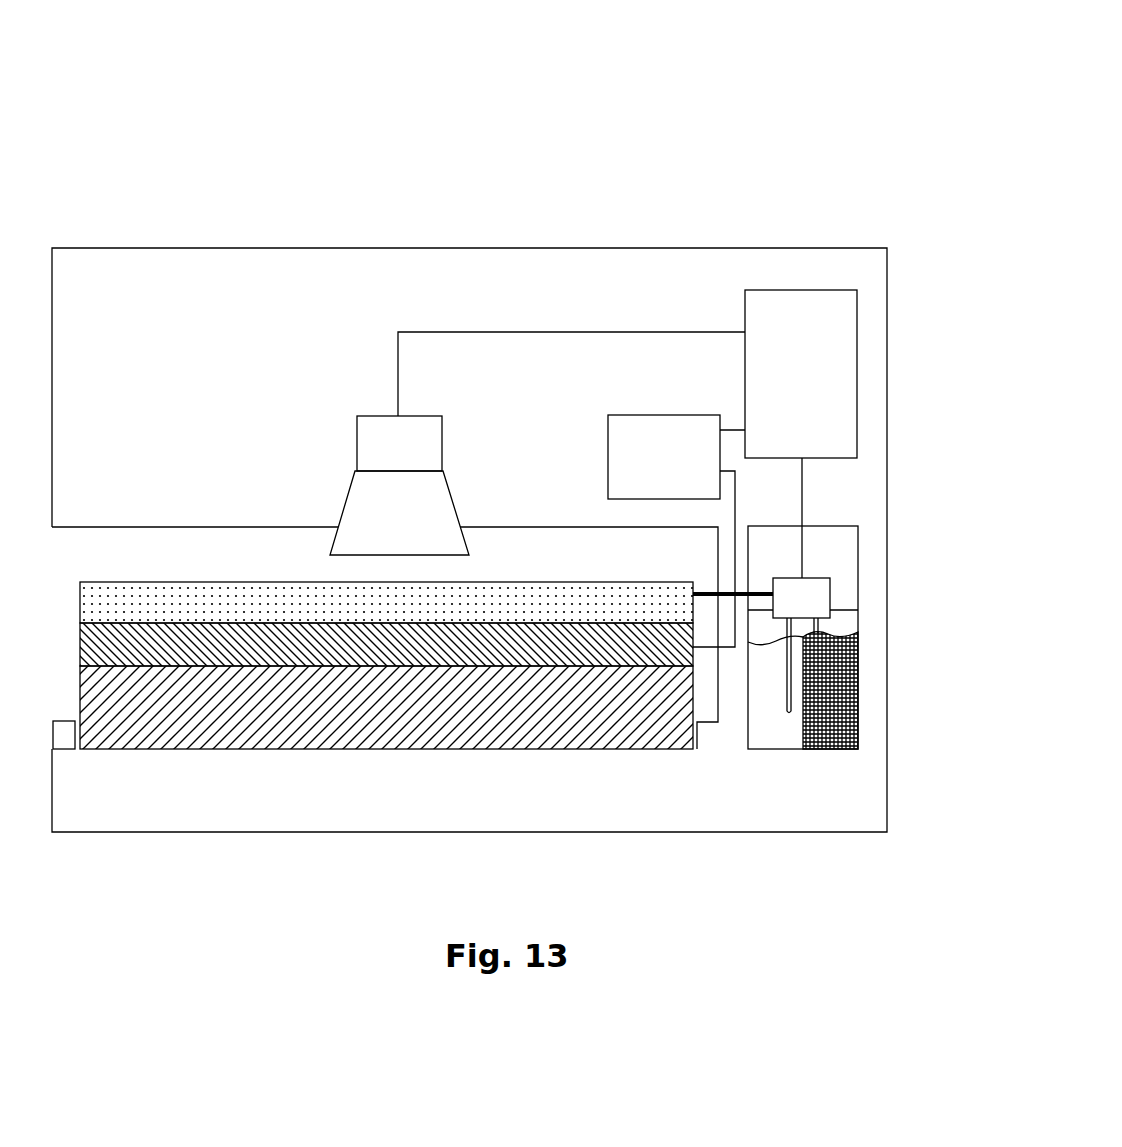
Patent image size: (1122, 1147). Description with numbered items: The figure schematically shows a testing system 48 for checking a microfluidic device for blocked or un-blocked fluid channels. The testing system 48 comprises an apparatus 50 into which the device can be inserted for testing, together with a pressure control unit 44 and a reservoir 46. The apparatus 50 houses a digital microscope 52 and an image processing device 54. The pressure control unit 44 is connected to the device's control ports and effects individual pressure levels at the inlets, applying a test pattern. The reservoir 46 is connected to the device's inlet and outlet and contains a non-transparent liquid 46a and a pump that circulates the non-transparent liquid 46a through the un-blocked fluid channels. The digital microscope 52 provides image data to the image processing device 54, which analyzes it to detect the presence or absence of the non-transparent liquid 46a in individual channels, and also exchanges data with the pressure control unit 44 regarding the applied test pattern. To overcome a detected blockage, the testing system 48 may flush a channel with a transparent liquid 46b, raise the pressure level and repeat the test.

The testing system 48 is at (733, 43).
The apparatus 50 is at (160, 248).
The digital microscope 52 is at (343, 513).
The image processing device 54 is at (801, 434).
The pressure control unit 44 is at (676, 531).
The reservoir 46 is at (806, 638).
The non-transparent liquid 46a is at (838, 680).
The transparent liquid 46b is at (775, 735).